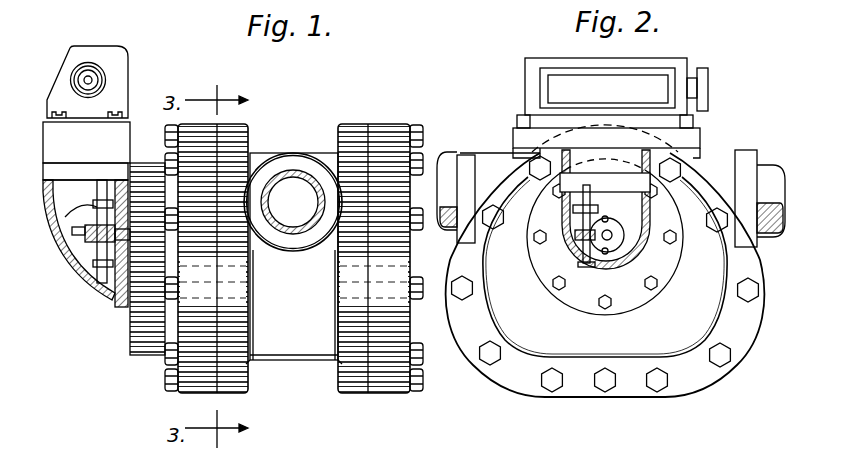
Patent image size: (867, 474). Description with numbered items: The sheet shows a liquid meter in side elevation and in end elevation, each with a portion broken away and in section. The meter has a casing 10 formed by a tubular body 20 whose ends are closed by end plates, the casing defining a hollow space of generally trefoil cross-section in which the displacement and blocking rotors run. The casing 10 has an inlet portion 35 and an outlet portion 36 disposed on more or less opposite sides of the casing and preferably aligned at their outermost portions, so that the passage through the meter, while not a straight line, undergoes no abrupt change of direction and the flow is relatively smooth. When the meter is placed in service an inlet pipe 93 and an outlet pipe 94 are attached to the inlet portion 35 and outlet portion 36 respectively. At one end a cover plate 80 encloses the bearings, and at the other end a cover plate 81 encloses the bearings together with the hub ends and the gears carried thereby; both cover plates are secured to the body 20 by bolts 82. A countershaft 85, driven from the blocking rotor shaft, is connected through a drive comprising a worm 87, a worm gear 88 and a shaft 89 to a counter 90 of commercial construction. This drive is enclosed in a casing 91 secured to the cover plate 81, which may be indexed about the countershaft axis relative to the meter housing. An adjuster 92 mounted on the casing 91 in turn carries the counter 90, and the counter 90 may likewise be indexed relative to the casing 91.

In FIG. 1, the casing 10 is at (281, 363).
In FIG. 1, the tubular body 20 is at (317, 353).
In FIG. 1, the inlet portion 35 is at (293, 152).
In FIG. 2, the inlet portion 35 is at (747, 148).
In FIG. 2, the outlet portion 36 is at (483, 160).
In FIG. 1, the cover plate 80 is at (399, 395).
In FIG. 1, the cover plate 81 is at (138, 323).
In FIG. 2, the cover plate 81 is at (593, 343).
In FIG. 1, the bolts 82 is at (166, 382).
In FIG. 2, the bolts 82 is at (655, 392).
In FIG. 1, the countershaft 85 is at (123, 235).
In FIG. 1, the worm 87 is at (80, 258).
In FIG. 2, the worm 87 is at (658, 257).
In FIG. 1, the worm gear 88 is at (60, 216).
In FIG. 2, the worm gear 88 is at (575, 238).
In FIG. 1, the shaft 89 is at (104, 193).
In FIG. 2, the shaft 89 is at (573, 190).
In FIG. 1, the counter 90 is at (117, 60).
In FIG. 2, the counter 90 is at (680, 58).
In FIG. 1, the casing 91 is at (97, 243).
In FIG. 2, the casing 91 is at (622, 250).
In FIG. 1, the adjuster 92 is at (84, 154).
In FIG. 2, the adjuster 92 is at (692, 155).
In FIG. 1, the inlet pipe 93 is at (300, 232).
In FIG. 2, the inlet pipe 93 is at (775, 160).
In FIG. 2, the outlet pipe 94 is at (440, 150).